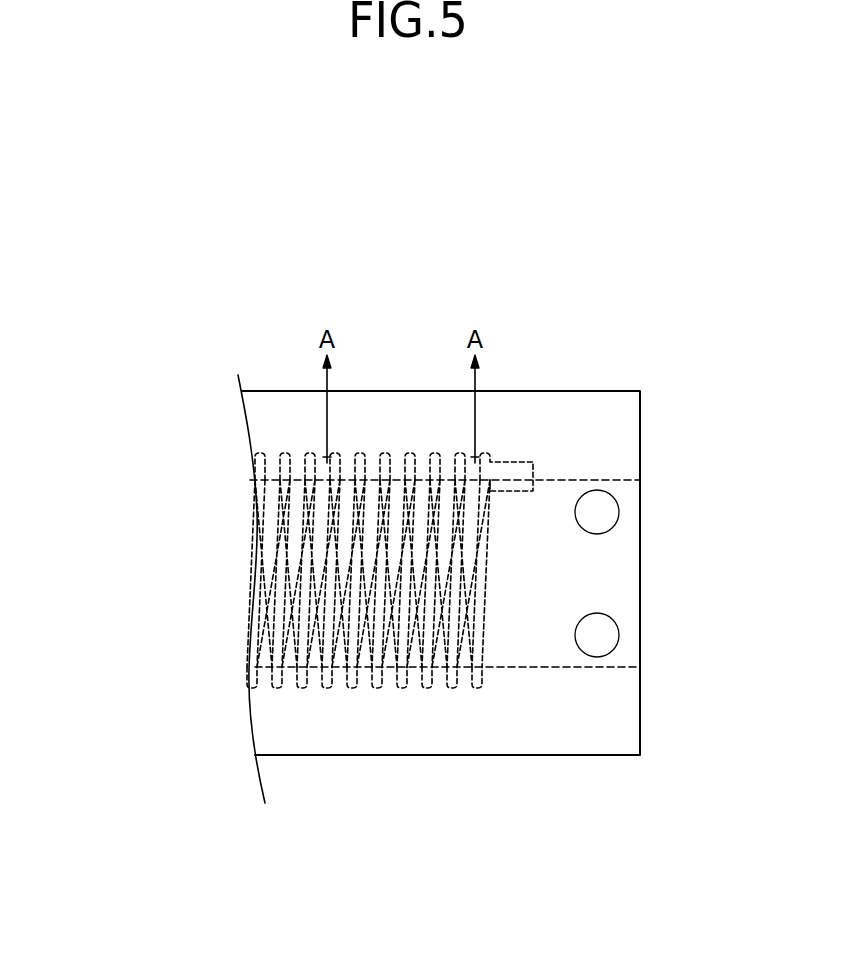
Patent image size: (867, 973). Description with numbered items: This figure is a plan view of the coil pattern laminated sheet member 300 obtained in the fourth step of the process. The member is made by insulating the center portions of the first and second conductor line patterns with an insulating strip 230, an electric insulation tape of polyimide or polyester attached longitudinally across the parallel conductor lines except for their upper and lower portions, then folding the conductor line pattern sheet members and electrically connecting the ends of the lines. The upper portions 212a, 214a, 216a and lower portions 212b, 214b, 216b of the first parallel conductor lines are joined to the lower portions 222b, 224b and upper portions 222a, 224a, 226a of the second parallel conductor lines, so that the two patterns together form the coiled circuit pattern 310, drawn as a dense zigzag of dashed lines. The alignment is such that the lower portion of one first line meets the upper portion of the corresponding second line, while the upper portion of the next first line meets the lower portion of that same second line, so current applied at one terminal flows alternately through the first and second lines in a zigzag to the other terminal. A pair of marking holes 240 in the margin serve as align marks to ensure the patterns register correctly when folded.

The coil pattern laminated sheet member 300 is at (632, 371).
The coiled circuit pattern 310 is at (283, 526).
The insulating strip 230 is at (615, 560).
The marking holes 240 is at (610, 638).
The upper portion of first parallel conductor line 212a is at (492, 455).
The lower portion of first parallel conductor line 212b is at (575, 753).
The upper portion of second parallel conductor line 222a is at (478, 690).
The upper portion of first parallel conductor line 214a is at (467, 376).
The lower portion of first parallel conductor line 214b is at (442, 768).
The lower portion of second parallel conductor line 222b is at (462, 452).
The upper portion of first parallel conductor line 216a is at (346, 361).
The lower portion of first parallel conductor line 216b is at (314, 753).
The upper portion of second parallel conductor line 224a is at (448, 690).
The lower portion of second parallel conductor line 224b is at (437, 452).
The upper portion of second parallel conductor line 226a is at (425, 690).